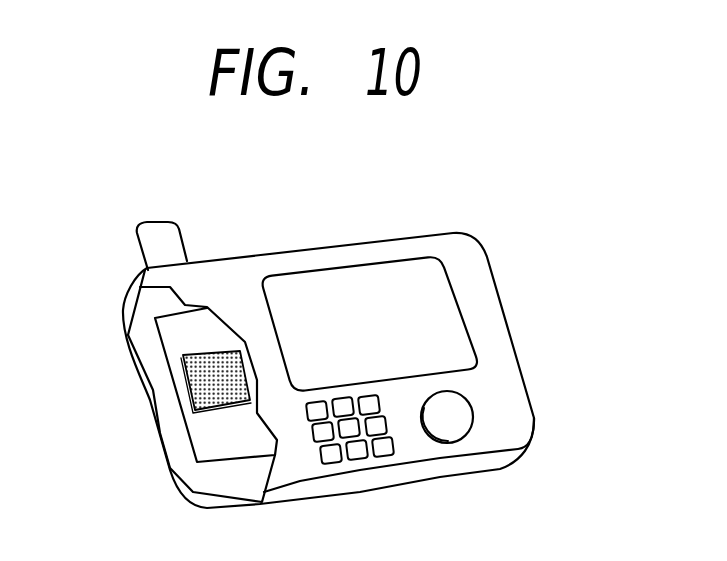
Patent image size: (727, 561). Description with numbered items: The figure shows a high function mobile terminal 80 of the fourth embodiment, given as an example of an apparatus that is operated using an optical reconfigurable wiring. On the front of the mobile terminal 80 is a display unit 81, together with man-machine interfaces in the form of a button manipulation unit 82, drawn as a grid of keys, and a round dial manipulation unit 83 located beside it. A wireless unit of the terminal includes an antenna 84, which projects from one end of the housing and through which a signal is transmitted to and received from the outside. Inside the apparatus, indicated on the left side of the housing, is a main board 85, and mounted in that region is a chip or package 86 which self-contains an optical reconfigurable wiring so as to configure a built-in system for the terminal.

The mobile terminal 80 is at (515, 402).
The display unit 81 is at (438, 292).
The button manipulation unit 82 is at (357, 448).
The dial manipulation unit 83 is at (453, 422).
The antenna 84 is at (158, 233).
The main board 85 is at (173, 330).
The chip or package 86 is at (202, 380).